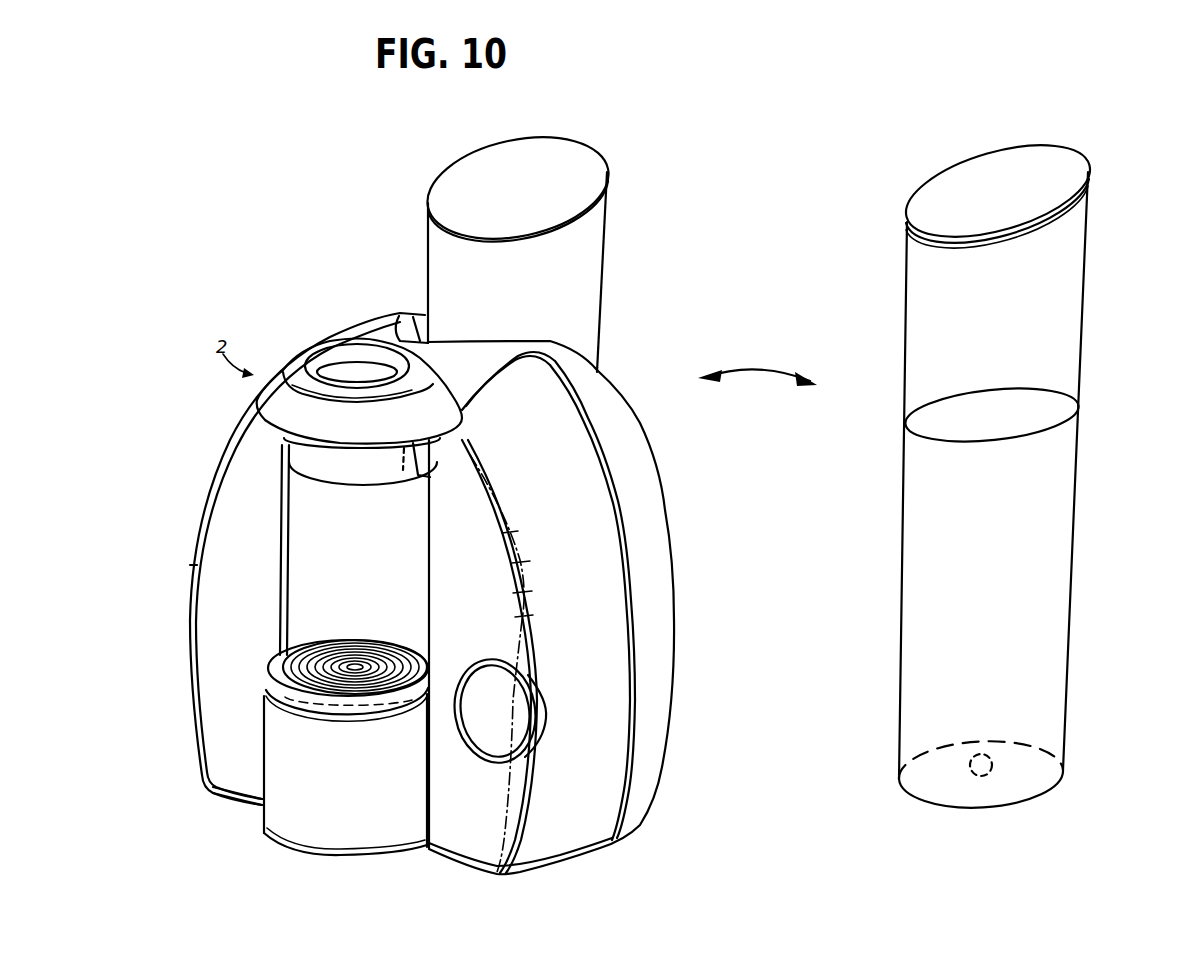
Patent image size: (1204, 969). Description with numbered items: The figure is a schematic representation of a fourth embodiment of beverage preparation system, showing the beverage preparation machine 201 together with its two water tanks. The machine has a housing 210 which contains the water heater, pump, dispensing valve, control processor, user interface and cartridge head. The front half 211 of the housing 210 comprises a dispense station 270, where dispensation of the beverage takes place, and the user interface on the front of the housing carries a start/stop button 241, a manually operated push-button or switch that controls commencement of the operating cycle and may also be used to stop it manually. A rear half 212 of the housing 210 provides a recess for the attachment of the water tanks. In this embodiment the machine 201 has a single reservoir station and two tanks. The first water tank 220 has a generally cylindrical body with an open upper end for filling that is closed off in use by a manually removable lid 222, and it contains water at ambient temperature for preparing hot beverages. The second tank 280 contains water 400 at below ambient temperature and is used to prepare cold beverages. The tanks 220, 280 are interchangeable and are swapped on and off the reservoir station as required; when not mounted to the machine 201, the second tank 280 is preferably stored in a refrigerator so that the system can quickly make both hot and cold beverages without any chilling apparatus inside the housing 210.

The beverage preparation machine 201 is at (304, 258).
The housing 210 is at (188, 512).
The front half 211 is at (203, 719).
The rear half 212 is at (657, 640).
The first water tank 220 is at (620, 291).
The manually removable lid 222 is at (588, 157).
The start/stop button 241 is at (486, 737).
The dispense station 270 is at (238, 594).
The second water tank 280 is at (1108, 289).
The water 400 is at (1053, 478).